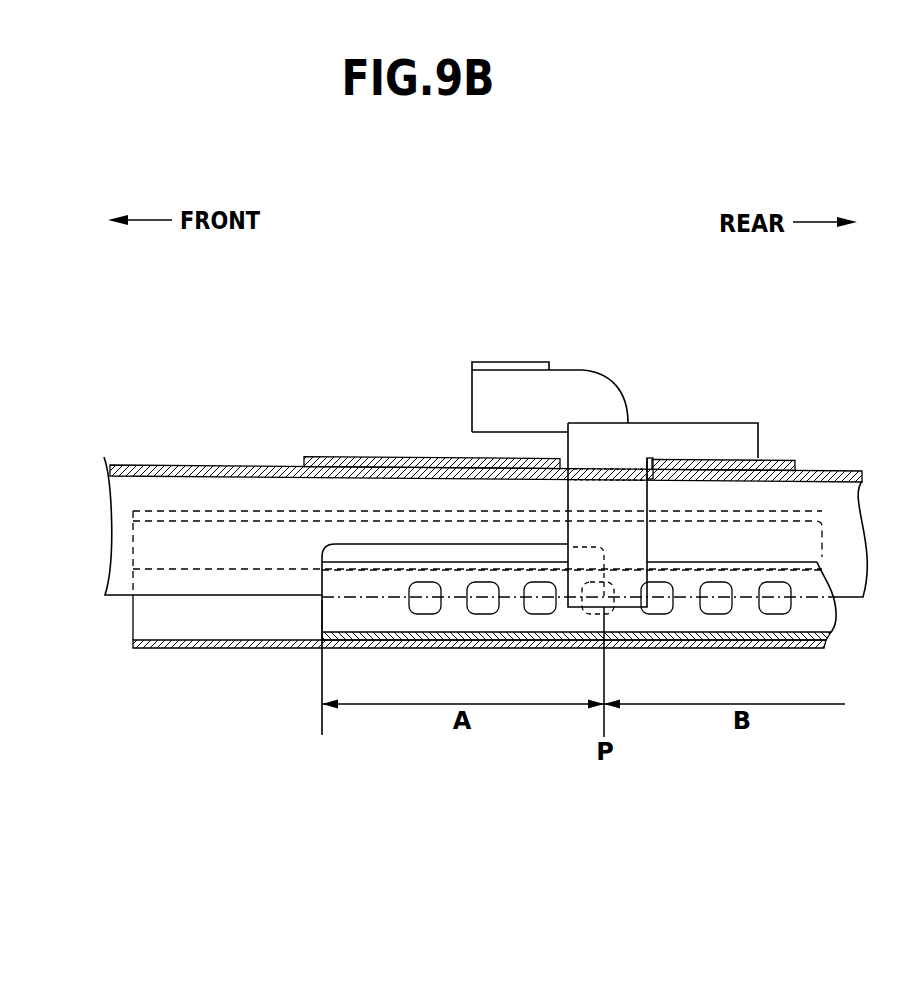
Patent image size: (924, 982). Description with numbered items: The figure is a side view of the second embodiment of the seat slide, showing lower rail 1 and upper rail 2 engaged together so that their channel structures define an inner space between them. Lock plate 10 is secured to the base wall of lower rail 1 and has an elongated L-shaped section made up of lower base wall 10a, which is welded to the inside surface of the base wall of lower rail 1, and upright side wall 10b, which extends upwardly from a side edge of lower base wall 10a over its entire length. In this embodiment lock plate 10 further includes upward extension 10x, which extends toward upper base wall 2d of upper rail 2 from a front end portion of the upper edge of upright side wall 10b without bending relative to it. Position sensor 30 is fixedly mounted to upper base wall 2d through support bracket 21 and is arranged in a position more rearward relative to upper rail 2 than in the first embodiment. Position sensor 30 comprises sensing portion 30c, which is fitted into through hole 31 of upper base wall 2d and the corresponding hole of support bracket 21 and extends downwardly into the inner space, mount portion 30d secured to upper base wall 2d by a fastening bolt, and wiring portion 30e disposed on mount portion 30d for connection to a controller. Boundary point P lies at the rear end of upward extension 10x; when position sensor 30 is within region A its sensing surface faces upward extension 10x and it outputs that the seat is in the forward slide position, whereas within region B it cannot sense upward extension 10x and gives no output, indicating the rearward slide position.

The lower rail 1 is at (148, 613).
The upper rail 2 is at (154, 458).
The upper base wall 2d is at (217, 465).
The lock plate 10 is at (556, 548).
The lower base wall 10a is at (833, 634).
The upright side wall 10b is at (332, 608).
The upward extension 10x is at (453, 553).
The support bracket 21 is at (367, 453).
The position sensor 30 is at (669, 414).
The sensing portion 30c is at (622, 492).
The mount portion 30d is at (733, 437).
The wiring portion 30e is at (562, 388).
The through hole 31 is at (648, 473).